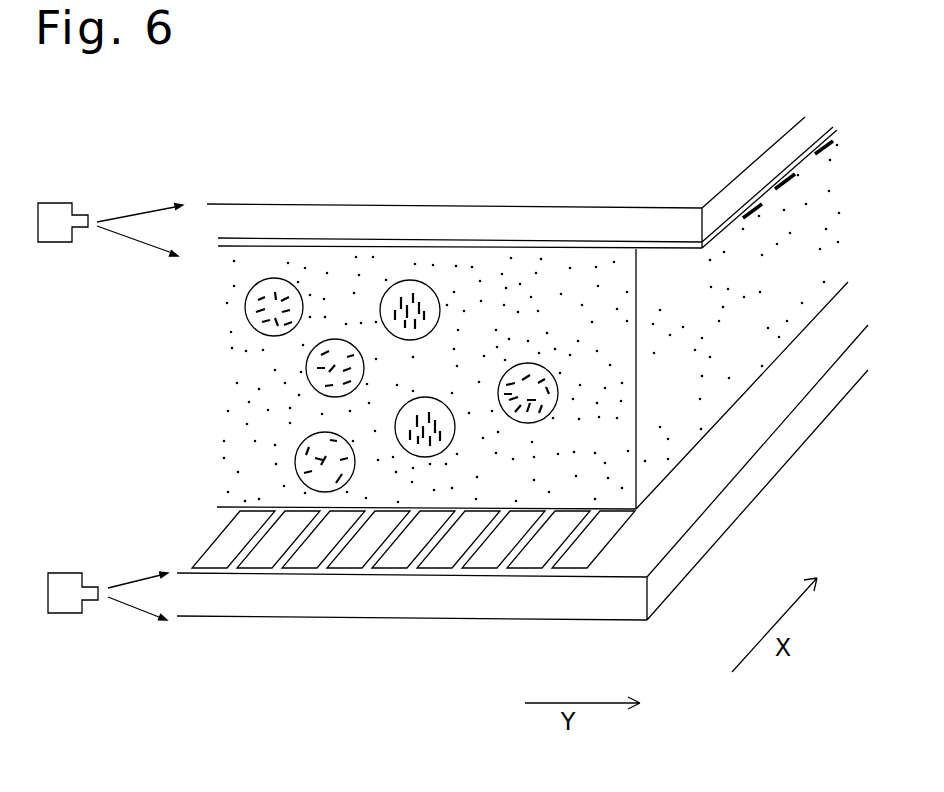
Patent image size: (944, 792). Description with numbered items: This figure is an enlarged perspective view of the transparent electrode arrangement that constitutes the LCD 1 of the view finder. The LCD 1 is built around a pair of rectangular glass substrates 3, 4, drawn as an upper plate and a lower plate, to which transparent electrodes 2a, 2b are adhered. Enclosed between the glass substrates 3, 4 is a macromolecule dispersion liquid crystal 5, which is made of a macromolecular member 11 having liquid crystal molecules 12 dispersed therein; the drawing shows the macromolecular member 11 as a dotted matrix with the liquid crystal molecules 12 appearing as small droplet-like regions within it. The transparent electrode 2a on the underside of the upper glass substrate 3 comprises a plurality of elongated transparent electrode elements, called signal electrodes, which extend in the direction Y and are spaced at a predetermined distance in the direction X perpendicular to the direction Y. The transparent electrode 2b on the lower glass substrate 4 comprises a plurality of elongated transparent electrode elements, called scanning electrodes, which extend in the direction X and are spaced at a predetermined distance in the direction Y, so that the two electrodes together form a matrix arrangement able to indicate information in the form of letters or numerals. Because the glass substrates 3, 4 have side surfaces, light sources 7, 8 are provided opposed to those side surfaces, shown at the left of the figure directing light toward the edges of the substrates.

The LCD 1 is at (511, 391).
The transparent electrode 2a is at (750, 213).
The transparent electrode 2b is at (405, 557).
The glass substrate 3 is at (512, 223).
The glass substrate 4 is at (615, 610).
The macromolecule dispersion liquid crystal 5 is at (787, 553).
The light source 7 is at (52, 203).
The light source 8 is at (60, 573).
The macromolecular member 11 is at (247, 427).
The liquid crystal molecules 12 is at (246, 315).